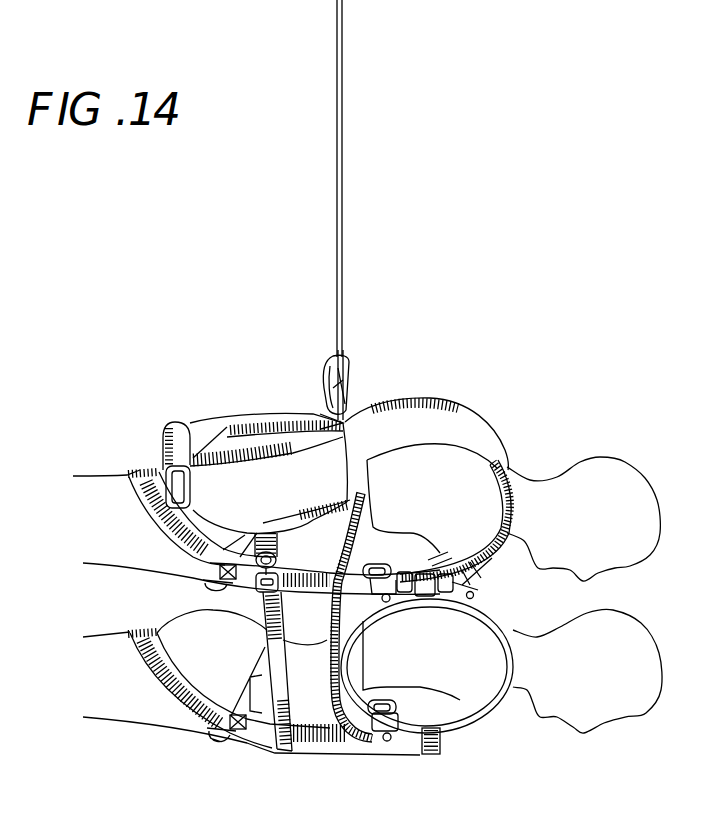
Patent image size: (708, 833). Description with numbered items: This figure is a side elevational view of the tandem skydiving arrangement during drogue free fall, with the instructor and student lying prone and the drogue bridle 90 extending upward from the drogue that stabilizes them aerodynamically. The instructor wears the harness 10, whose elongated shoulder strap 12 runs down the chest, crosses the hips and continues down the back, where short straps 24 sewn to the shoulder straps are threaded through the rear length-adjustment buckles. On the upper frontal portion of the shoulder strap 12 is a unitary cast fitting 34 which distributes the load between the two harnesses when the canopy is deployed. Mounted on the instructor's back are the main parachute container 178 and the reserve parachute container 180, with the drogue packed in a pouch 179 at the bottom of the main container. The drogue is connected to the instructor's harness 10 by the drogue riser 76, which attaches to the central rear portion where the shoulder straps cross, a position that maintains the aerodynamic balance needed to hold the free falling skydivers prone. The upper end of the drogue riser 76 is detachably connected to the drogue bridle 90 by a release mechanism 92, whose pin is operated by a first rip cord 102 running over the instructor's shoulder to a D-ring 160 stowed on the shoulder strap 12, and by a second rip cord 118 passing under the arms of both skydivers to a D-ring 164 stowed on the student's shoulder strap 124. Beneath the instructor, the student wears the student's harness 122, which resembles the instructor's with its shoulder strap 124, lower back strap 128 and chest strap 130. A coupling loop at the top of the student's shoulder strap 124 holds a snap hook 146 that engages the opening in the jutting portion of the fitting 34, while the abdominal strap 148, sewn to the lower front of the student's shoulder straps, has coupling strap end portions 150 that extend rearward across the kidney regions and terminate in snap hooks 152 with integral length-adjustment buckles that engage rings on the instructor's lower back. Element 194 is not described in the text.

The harness 10 is at (512, 468).
The shoulder strap 12 is at (152, 503).
The short strap 24 is at (240, 536).
The fitting 34 is at (480, 568).
The drogue riser 76 is at (348, 386).
The drogue bridle 90 is at (345, 213).
The release mechanism 92 is at (322, 397).
The first rip cord 102 is at (518, 520).
The second rip cord 118 is at (350, 650).
The student's harness 122 is at (500, 712).
The shoulder strap 124 is at (140, 672).
The lower back strap 128 is at (256, 661).
The chest strap 130 is at (427, 757).
The snap hook 146 is at (456, 584).
The abdominal strap 148 is at (282, 753).
The coupling strap end portion 150 is at (263, 608).
The snap hook 152 is at (208, 563).
The D-ring 160 is at (370, 566).
The D-ring 164 is at (378, 712).
The main parachute container 178 is at (240, 420).
The pouch 179 is at (165, 440).
The reserve parachute container 180 is at (450, 406).
The pawl 194 is at (437, 556).